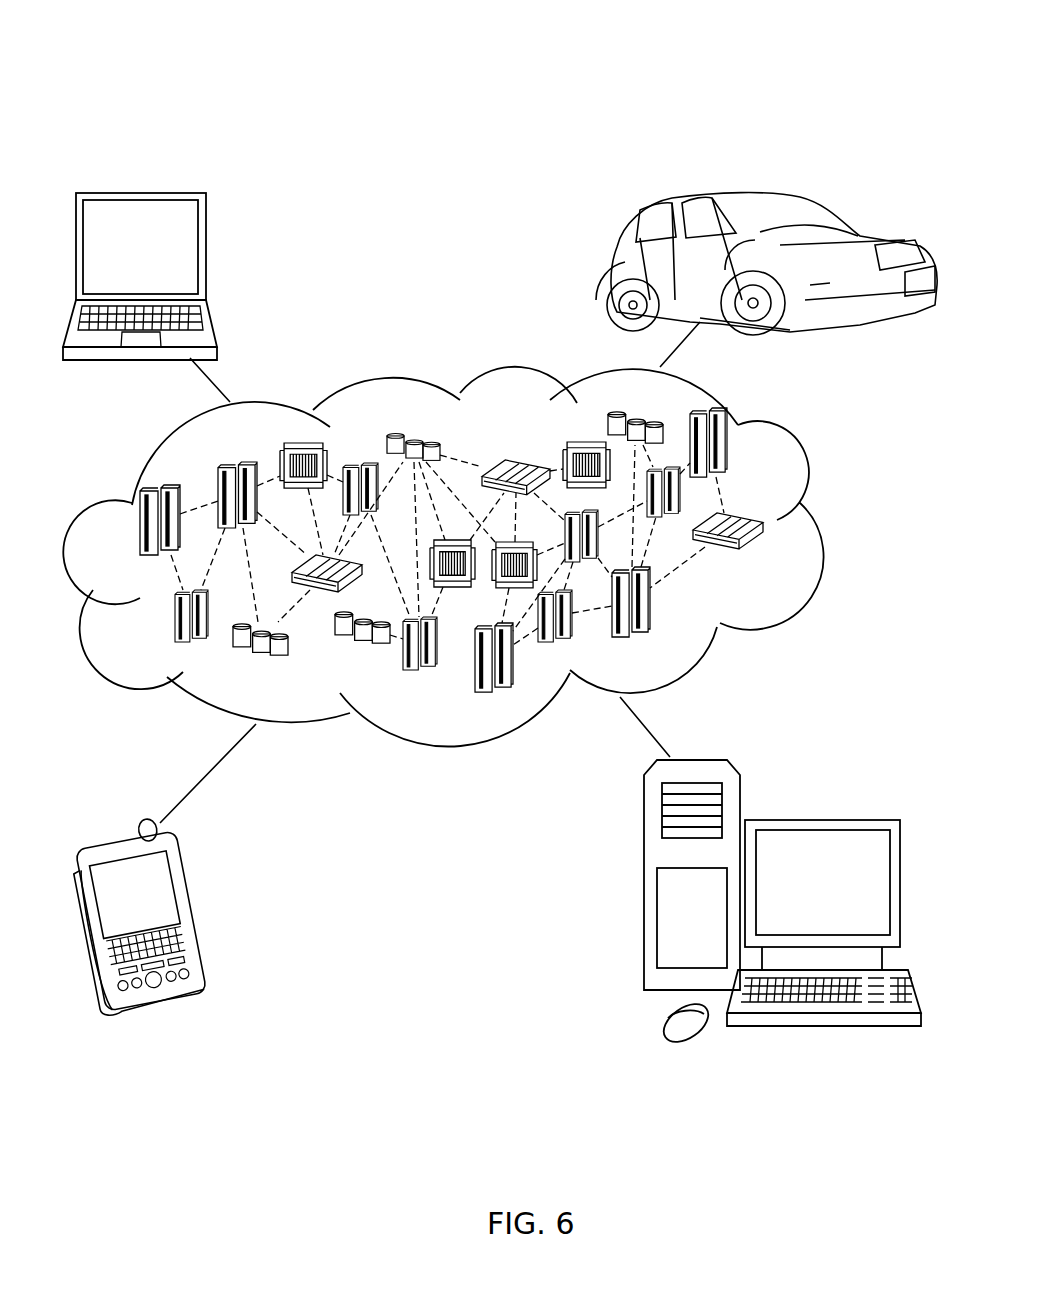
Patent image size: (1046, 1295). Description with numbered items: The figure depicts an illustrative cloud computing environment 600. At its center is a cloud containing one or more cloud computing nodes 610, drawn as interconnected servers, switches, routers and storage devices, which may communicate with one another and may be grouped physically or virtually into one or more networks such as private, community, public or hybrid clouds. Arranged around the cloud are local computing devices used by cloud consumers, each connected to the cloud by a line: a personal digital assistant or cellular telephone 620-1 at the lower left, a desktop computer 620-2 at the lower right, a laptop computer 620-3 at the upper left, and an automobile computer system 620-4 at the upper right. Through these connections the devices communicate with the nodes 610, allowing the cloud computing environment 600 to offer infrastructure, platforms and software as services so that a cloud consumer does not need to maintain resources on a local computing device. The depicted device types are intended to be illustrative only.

The cloud computing environment 600 is at (765, 62).
The cloud computing nodes 610 is at (767, 559).
The personal digital assistant (PDA) or cellular telephone 620-1 is at (197, 913).
The desktop computer 620-2 is at (828, 799).
The laptop computer 620-3 is at (206, 254).
The automobile computer system 620-4 is at (612, 268).